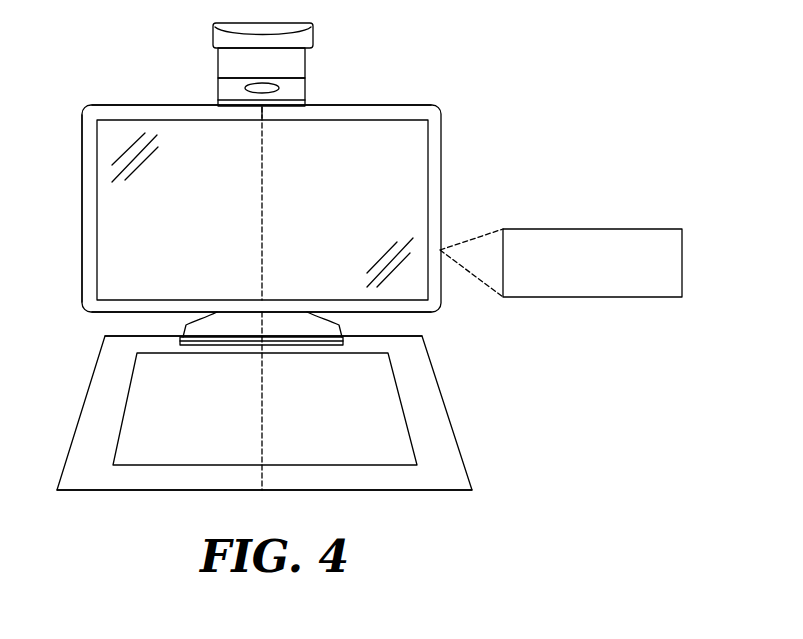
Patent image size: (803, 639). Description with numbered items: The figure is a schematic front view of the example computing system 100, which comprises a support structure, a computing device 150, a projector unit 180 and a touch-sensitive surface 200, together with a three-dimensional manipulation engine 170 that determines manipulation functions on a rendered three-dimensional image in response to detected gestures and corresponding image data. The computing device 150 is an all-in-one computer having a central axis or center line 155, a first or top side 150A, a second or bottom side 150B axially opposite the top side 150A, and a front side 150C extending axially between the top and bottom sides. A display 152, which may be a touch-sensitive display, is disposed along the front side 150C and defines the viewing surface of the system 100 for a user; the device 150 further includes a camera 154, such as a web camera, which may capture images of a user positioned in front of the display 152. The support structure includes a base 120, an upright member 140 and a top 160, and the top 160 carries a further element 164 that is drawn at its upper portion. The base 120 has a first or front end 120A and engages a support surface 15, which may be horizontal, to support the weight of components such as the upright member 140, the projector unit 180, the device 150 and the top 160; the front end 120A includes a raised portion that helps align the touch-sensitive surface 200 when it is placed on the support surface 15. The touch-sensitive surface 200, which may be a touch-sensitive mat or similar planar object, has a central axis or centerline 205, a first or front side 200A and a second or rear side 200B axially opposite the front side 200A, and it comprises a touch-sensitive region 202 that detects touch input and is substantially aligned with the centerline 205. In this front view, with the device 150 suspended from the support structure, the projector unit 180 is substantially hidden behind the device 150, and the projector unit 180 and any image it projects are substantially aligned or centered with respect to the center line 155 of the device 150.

The support surface 15 is at (605, 425).
The computing system 100 is at (562, 131).
The base 120 is at (163, 334).
The front end 120A is at (205, 349).
The upright member 140 is at (217, 62).
The computing device 150 is at (446, 185).
The top side 150A is at (358, 106).
The bottom side 150B is at (385, 313).
The front side 150C is at (101, 212).
The display 152 is at (340, 177).
The camera 154 is at (265, 114).
The center line 155 is at (262, 148).
The top 160 is at (316, 22).
The lens cover 164 is at (254, 37).
The 3D manipulation engine 170 is at (593, 297).
The projector unit 180 is at (217, 97).
The touch-sensitive surface 200 is at (426, 445).
The front side 200A is at (376, 491).
The rear side 200B is at (127, 336).
The touch-sensitive region 202 is at (392, 395).
The centerline 205 is at (262, 372).